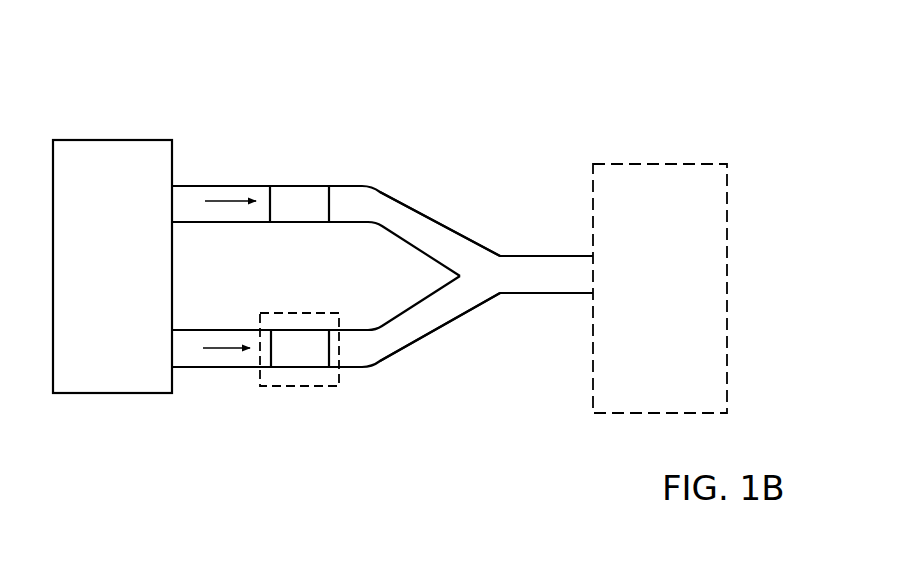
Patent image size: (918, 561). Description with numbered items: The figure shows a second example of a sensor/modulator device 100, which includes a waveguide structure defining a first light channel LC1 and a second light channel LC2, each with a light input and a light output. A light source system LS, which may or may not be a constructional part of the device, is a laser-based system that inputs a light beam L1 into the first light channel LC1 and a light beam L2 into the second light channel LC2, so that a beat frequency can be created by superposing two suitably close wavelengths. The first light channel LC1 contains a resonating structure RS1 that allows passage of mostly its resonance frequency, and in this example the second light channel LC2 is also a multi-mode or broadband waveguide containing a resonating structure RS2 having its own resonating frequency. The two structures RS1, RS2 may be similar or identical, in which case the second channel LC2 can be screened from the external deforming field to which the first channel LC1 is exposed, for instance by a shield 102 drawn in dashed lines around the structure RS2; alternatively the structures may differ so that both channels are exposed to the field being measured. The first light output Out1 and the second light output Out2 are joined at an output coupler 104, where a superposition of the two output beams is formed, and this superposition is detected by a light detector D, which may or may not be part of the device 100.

The sensor/modulator device 100 is at (613, 87).
The light source system LS is at (111, 139).
The light beam L1 is at (219, 208).
The light beam L2 is at (212, 352).
The resonating structure RS1 is at (297, 185).
The resonating structure RS2 is at (300, 368).
The first light channel LC1 is at (382, 177).
The second light channel LC2 is at (382, 386).
The first light output Out1 is at (449, 205).
The second light output Out2 is at (447, 345).
The shield 102 is at (260, 386).
The output coupler 104 is at (537, 305).
The light detector D is at (728, 290).